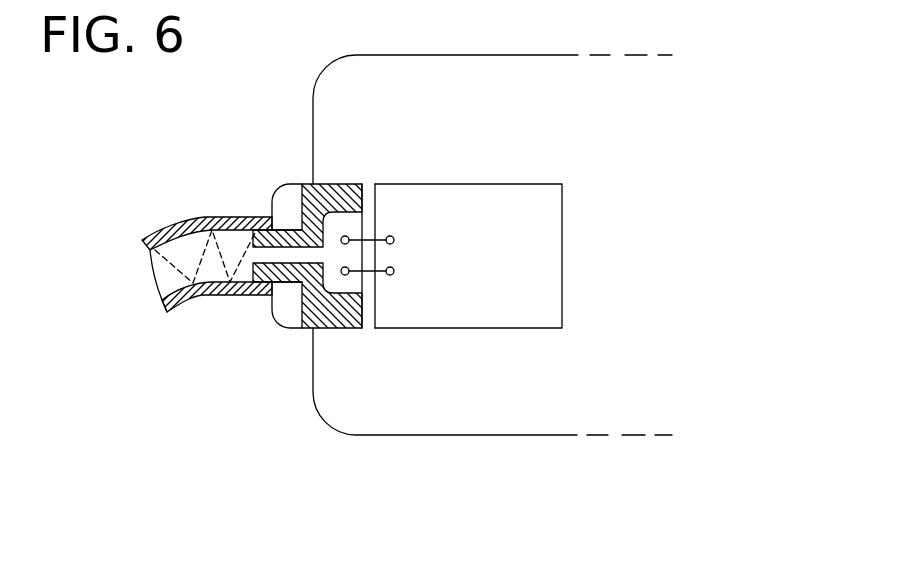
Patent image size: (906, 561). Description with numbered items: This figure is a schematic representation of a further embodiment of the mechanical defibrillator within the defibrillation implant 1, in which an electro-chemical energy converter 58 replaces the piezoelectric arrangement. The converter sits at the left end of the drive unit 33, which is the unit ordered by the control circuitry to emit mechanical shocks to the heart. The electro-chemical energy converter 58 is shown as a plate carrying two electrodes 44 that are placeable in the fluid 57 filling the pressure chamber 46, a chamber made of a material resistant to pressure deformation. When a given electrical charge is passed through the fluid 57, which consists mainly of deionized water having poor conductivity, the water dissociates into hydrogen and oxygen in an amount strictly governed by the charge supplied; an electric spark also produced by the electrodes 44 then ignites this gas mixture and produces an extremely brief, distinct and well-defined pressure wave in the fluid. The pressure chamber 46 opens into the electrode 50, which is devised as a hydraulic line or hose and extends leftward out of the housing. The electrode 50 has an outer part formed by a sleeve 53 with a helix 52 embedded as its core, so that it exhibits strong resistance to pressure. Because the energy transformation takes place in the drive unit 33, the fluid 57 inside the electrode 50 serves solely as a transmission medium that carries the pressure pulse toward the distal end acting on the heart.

The defibrillation implant 1 is at (545, 435).
The drive unit 33 is at (562, 278).
The electrodes 44 is at (383, 255).
The pressure chamber 46 is at (340, 288).
The electrode 50 is at (220, 308).
The helix 52 is at (153, 265).
The sleeve 53 is at (180, 226).
The fluid 57 is at (160, 285).
The electro-chemical energy converter 58 is at (383, 200).